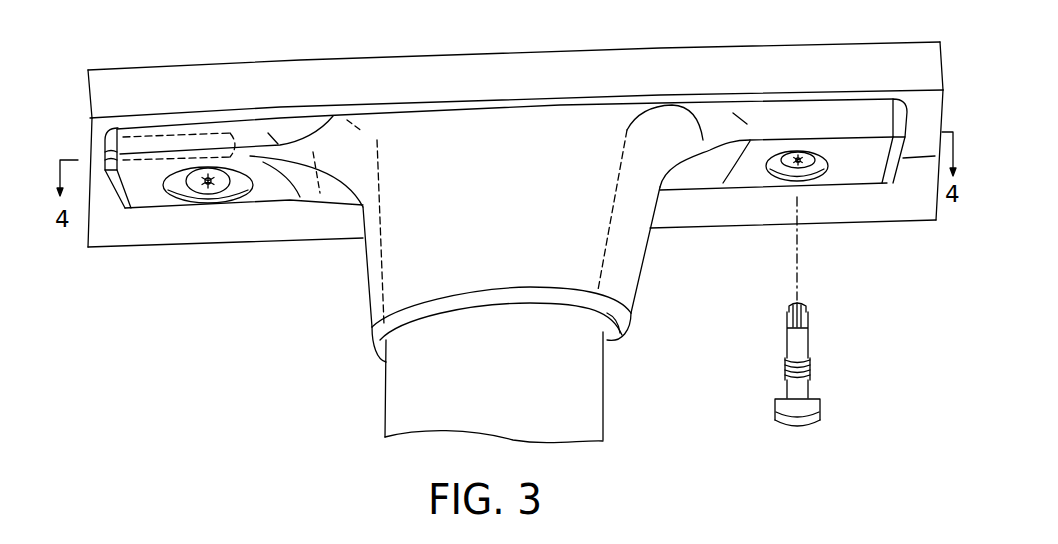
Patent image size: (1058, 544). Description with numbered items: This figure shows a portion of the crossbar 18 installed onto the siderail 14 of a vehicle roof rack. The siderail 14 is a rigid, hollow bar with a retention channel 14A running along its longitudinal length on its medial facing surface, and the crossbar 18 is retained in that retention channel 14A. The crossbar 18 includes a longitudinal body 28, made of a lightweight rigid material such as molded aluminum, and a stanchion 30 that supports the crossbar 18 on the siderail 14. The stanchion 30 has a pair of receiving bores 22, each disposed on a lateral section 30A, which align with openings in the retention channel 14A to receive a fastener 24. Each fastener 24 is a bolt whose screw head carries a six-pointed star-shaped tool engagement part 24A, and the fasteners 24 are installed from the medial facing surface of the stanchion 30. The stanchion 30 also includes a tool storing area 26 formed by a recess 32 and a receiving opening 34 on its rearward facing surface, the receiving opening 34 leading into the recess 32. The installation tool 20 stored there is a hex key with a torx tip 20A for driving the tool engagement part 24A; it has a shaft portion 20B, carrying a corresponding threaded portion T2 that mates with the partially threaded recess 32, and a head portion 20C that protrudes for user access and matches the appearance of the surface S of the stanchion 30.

The siderail 14 is at (600, 72).
The retention channel 14A is at (79, 150).
The crossbar 18 is at (310, 395).
The installation tool 20 is at (860, 317).
The torx tip 20A is at (786, 315).
The shaft portion 20B is at (786, 391).
The head portion 20C is at (804, 428).
The corresponding threaded portion T2 is at (810, 367).
The receiving bore 22 is at (222, 193).
The fastener 24 is at (208, 185).
The tool engagement part 24A is at (205, 190).
The tool storing area 26 is at (80, 143).
The longitudinal body 28 is at (607, 400).
The stanchion 30 is at (627, 252).
The lateral section 30A is at (143, 190).
The recess 32 is at (206, 133).
The receiving opening 34 is at (80, 135).
The surface S is at (118, 195).